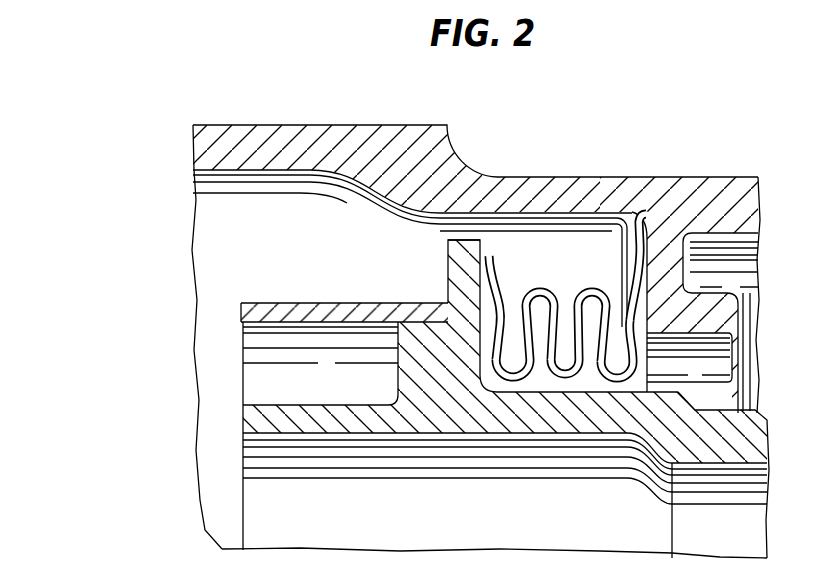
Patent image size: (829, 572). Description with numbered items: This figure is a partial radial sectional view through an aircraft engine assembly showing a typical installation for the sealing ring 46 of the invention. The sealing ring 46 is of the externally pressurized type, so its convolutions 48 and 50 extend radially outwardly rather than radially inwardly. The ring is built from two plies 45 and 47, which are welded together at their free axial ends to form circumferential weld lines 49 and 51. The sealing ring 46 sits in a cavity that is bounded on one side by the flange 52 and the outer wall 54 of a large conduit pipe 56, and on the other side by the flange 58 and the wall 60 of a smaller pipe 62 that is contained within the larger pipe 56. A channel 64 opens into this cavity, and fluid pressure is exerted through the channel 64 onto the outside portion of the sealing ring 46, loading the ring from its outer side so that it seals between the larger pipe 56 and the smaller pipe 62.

The ply 45 is at (497, 343).
The sealing ring 46 is at (611, 384).
The ply 47 is at (620, 330).
The convolution 48 is at (547, 288).
The circumferential weld line 49 is at (488, 258).
The convolution 50 is at (597, 288).
The circumferential weld line 51 is at (630, 214).
The flange 52 is at (664, 262).
The outer wall 54 is at (575, 180).
The large conduit pipe 56 is at (407, 125).
The flange 58 is at (460, 262).
The wall 60 is at (569, 423).
The smaller pipe 62 is at (480, 435).
The channel 64 is at (464, 231).